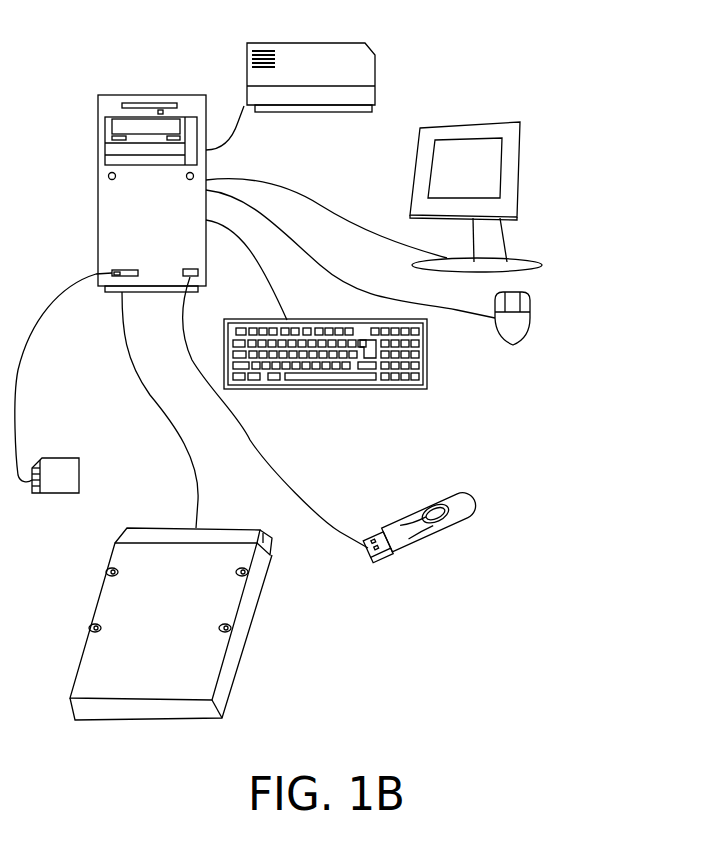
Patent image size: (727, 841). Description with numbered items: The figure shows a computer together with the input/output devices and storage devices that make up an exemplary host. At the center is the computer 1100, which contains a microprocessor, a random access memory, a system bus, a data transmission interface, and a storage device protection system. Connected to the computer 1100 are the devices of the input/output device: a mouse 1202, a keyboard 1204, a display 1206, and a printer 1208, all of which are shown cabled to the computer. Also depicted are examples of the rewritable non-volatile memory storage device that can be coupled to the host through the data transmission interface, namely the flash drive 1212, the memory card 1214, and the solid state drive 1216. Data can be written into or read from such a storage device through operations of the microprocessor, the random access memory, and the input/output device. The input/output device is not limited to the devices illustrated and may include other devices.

The computer 1100 is at (155, 93).
The mouse 1202 is at (528, 323).
The keyboard 1204 is at (430, 366).
The display 1206 is at (478, 122).
The printer 1208 is at (308, 43).
The flash drive 1212 is at (420, 512).
The memory card 1214 is at (83, 466).
The solid state drive (SSD) 1216 is at (218, 520).